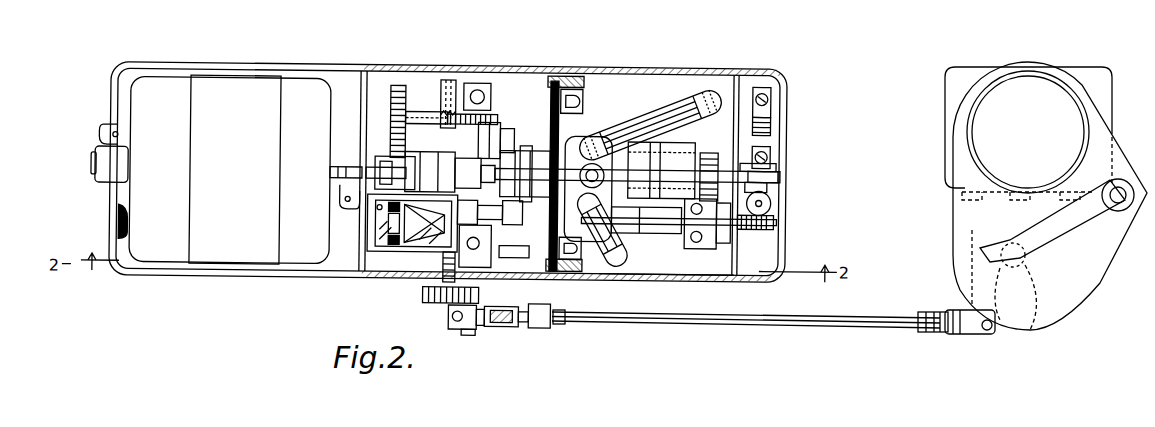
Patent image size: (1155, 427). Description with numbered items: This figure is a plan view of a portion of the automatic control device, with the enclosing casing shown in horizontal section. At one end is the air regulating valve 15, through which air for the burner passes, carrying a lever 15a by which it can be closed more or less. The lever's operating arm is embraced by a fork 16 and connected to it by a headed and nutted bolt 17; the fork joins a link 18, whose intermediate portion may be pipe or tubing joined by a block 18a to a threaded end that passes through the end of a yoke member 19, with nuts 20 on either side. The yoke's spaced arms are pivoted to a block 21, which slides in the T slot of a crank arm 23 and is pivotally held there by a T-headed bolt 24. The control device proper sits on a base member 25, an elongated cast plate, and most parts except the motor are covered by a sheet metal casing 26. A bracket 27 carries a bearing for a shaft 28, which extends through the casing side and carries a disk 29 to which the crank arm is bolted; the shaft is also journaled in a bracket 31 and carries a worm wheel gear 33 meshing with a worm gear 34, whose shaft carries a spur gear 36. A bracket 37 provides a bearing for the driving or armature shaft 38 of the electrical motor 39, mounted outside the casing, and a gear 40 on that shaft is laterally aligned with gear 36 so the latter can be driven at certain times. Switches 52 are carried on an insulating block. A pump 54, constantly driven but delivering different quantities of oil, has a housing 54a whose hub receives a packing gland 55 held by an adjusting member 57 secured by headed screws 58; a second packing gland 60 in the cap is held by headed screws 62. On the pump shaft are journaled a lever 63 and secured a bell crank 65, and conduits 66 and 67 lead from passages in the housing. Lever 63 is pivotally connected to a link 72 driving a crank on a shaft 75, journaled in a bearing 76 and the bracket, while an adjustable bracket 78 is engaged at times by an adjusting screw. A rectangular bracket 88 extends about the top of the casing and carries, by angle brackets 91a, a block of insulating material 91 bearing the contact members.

The air regulating valve 15 is at (962, 220).
The lever 15a is at (1030, 325).
The fork 16 is at (964, 334).
The headed and nutted bolt 17 is at (992, 330).
The link 18 is at (655, 324).
The block 18a is at (556, 325).
The yoke member 19 is at (512, 327).
The nuts 20 is at (542, 308).
The block 21 is at (455, 329).
The crank arm 23 is at (424, 300).
The T-headed bolt 24 is at (478, 335).
The base member 25 is at (785, 240).
The sheet metal casing 26 is at (665, 278).
The bracket 27 is at (490, 268).
The shaft 28 is at (434, 124).
The disk 29 is at (470, 286).
The bracket 31 is at (481, 84).
The worm wheel gear 33 is at (485, 114).
The worm gear 34 is at (445, 104).
The spur gear 36 is at (395, 86).
The bracket 37 is at (353, 196).
The driving or armature shaft 38 is at (442, 160).
The electrical motor 39 is at (162, 262).
The gear 40 is at (386, 157).
The switches 52 is at (418, 255).
The pump 54 is at (660, 156).
The housing 54a is at (779, 174).
The packing gland 55 is at (498, 150).
The holding and adjusting member 57 is at (498, 226).
The headed screws 58 is at (470, 158).
The packing gland 60 is at (710, 150).
The headed screws 62 is at (771, 124).
The lever 63 is at (768, 184).
The bell crank 65 is at (776, 163).
The conduit 66 is at (625, 246).
The conduit 67 is at (665, 118).
The link 72 is at (757, 228).
The shaft 75 is at (640, 224).
The bearing 76 is at (700, 247).
The bracket 78 is at (771, 100).
The rectangular bracket 88 is at (578, 80).
The block of insulating material 91 is at (572, 140).
The angle brackets 91a is at (583, 96).